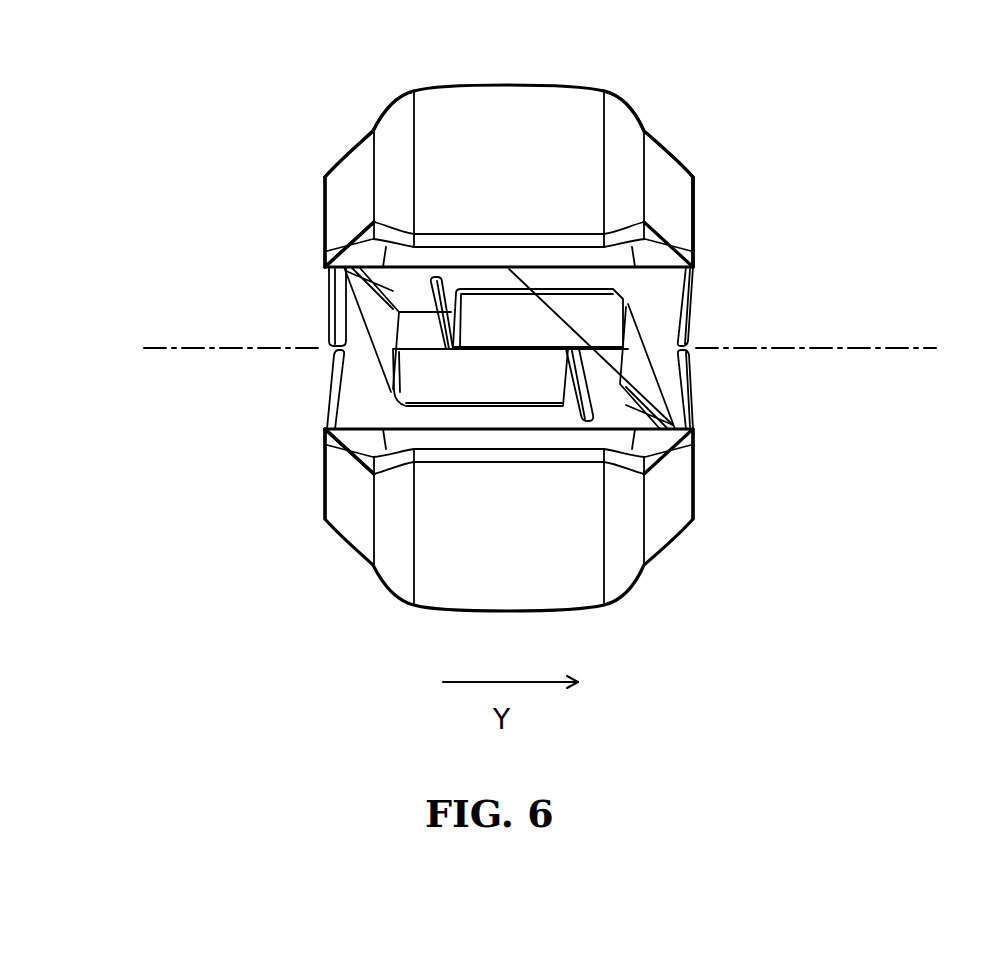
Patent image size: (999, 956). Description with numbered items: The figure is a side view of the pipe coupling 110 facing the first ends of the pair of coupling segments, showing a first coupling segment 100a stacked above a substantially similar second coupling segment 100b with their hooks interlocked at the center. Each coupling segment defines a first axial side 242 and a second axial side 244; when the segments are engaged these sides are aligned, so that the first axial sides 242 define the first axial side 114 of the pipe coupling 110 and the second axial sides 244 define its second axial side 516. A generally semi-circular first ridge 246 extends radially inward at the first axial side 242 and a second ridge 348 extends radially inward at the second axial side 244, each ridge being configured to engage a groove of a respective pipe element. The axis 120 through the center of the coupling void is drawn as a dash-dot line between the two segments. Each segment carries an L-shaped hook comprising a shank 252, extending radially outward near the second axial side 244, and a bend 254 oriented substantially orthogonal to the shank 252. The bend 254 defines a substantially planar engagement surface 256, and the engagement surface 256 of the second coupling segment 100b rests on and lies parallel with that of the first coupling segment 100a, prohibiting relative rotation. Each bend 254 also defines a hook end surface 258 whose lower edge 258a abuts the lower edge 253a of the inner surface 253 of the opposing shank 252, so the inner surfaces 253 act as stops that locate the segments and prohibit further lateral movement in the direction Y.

The first coupling segment 100a is at (643, 122).
The second coupling segment 100b is at (634, 594).
The pipe coupling 110 is at (76, 173).
The first axial side 114 is at (692, 222).
The axis 120 is at (888, 349).
The first axial side 242 is at (692, 248).
The second axial side 244 is at (323, 225).
The first ridge 246 is at (692, 318).
The shank 252 is at (392, 291).
The inner surface of the shank 253 is at (443, 291).
The lower edge of the inner surface 253a is at (450, 334).
The bend 254 is at (453, 290).
The engagement surface 256 is at (537, 344).
The hook end surface 258 is at (450, 330).
The lower edge of the hook end surface 258a is at (518, 313).
The second ridge 348 is at (324, 242).
The second axial side 516 is at (324, 209).